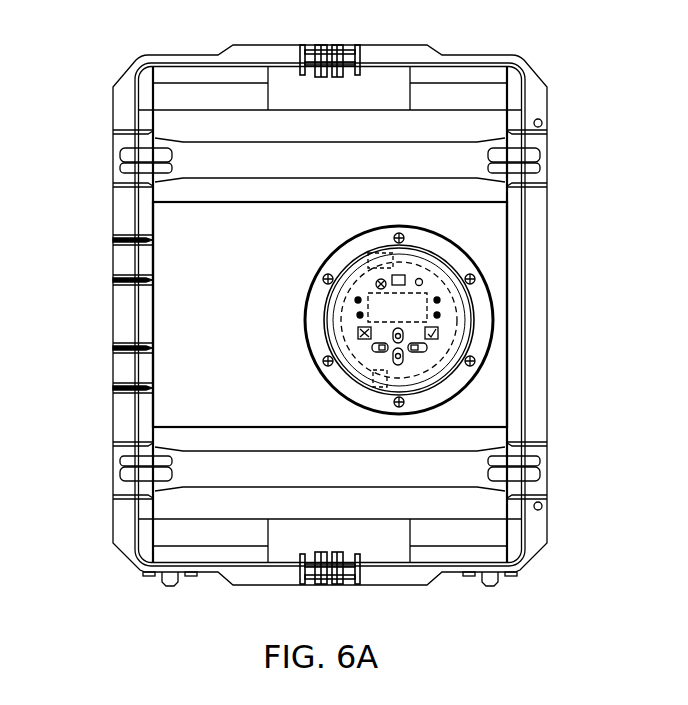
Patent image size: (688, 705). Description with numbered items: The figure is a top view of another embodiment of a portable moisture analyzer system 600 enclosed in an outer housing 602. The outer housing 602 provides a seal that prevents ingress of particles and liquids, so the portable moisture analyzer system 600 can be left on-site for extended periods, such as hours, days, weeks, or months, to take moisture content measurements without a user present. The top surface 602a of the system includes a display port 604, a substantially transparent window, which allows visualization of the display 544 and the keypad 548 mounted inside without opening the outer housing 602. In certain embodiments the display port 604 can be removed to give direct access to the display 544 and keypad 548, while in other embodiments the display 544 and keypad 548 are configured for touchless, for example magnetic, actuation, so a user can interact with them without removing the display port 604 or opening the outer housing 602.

The portable moisture analyzer system 600 is at (334, 317).
The outer housing 602 is at (268, 586).
The top surface 602a is at (165, 108).
The display port 604 is at (462, 319).
The display 544 is at (405, 303).
The keypad 548 is at (427, 347).